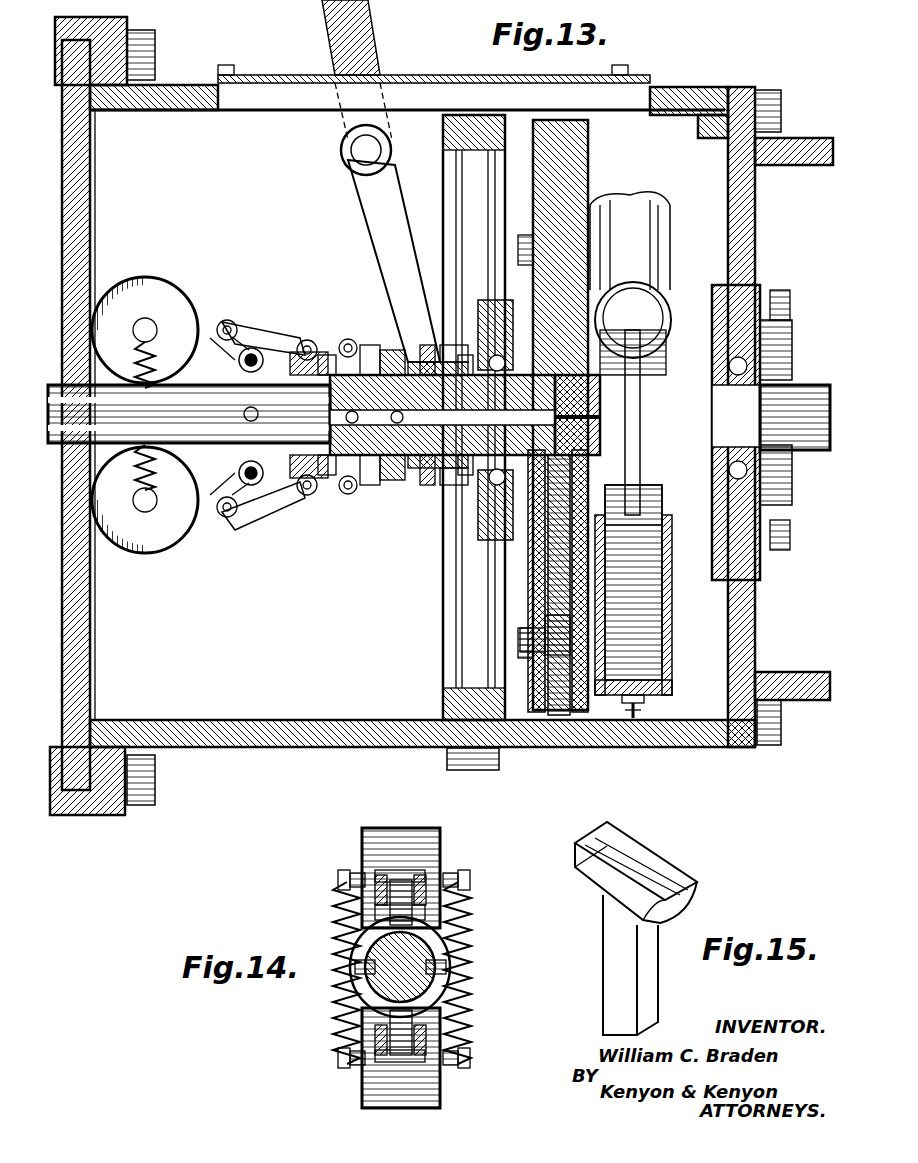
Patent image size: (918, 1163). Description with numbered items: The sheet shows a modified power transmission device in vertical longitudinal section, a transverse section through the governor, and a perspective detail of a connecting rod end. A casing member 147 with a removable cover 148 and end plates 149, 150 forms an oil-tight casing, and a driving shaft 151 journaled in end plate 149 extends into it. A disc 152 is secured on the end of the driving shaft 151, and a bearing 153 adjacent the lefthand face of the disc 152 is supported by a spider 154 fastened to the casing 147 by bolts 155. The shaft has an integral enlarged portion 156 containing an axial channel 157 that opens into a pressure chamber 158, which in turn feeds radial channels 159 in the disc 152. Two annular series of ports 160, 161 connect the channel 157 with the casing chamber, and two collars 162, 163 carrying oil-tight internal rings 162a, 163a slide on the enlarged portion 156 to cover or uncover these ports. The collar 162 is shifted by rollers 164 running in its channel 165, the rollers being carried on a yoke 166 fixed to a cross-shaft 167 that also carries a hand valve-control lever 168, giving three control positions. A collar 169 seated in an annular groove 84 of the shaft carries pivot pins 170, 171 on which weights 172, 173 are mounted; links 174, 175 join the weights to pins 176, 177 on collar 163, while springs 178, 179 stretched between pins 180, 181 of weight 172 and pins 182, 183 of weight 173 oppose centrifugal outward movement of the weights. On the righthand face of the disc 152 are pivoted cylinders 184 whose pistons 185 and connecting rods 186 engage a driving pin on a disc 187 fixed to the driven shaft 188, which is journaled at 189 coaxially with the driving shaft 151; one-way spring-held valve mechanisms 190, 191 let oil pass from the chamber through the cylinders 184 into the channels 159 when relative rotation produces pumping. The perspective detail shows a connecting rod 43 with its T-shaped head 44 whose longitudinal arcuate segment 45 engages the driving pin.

In FIG. 15, the connecting rod 43 is at (610, 952).
In FIG. 15, the T-shaped head 44 is at (690, 897).
In FIG. 15, the arcuate segment 45 is at (633, 858).
In FIG. 13, the annular groove 84 is at (243, 452).
In FIG. 13, the casing member 147 is at (268, 742).
In FIG. 13, the removable cover 148 is at (285, 75).
In FIG. 13, the end plate 149 is at (80, 185).
In FIG. 13, the end plate 150 is at (745, 245).
In FIG. 13, the driving shaft 151 is at (189, 414).
In FIG. 14, the driving shaft 151 is at (450, 950).
In FIG. 13, the disc 152 is at (578, 150).
In FIG. 13, the bearing 153 is at (490, 350).
In FIG. 13, the spider 154 is at (488, 200).
In FIG. 13, the bolts 155 is at (447, 762).
In FIG. 13, the enlarged portion 156 is at (315, 352).
In FIG. 13, the channel 157 is at (472, 470).
In FIG. 13, the pressure chamber 158 is at (600, 400).
In FIG. 13, the radial channels 159 is at (556, 560).
In FIG. 13, the ports 160 is at (380, 350).
In FIG. 13, the ports 161 is at (348, 345).
In FIG. 13, the collar 162 is at (462, 476).
In FIG. 13, the internal ring 162a is at (418, 480).
In FIG. 13, the collar 163 is at (370, 480).
In FIG. 13, the internal ring 163a is at (410, 483).
In FIG. 13, the rollers 164 is at (392, 480).
In FIG. 13, the channel 165 is at (427, 485).
In FIG. 13, the yoke 166 is at (372, 220).
In FIG. 13, the cross-shaft 167 is at (352, 150).
In FIG. 13, the hand valve-control lever 168 is at (370, 52).
In FIG. 13, the collar 169 is at (239, 362).
In FIG. 14, the collar 169 is at (445, 990).
In FIG. 13, the pivot pin 170 is at (228, 320).
In FIG. 14, the pivot pin 170 is at (430, 910).
In FIG. 13, the pivot pin 171 is at (250, 486).
In FIG. 14, the pivot pin 171 is at (430, 1025).
In FIG. 13, the weight 172 is at (160, 290).
In FIG. 14, the weight 172 is at (416, 840).
In FIG. 13, the weight 173 is at (145, 553).
In FIG. 14, the weight 173 is at (440, 1098).
In FIG. 13, the link 174 is at (282, 338).
In FIG. 14, the link 174 is at (380, 875).
In FIG. 13, the link 175 is at (285, 503).
In FIG. 14, the link 175 is at (378, 1070).
In FIG. 13, the pin 176 is at (307, 340).
In FIG. 13, the pin 177 is at (310, 496).
In FIG. 13, the spring 178 is at (148, 470).
In FIG. 14, the spring 178 is at (340, 915).
In FIG. 14, the spring 179 is at (448, 967).
In FIG. 14, the pin 180 is at (338, 876).
In FIG. 14, the pin 181 is at (462, 870).
In FIG. 14, the pin 182 is at (340, 1058).
In FIG. 14, the pin 183 is at (470, 1058).
In FIG. 13, the cylinders 184 is at (668, 622).
In FIG. 13, the pistons 185 is at (668, 530).
In FIG. 13, the connecting rods 186 is at (640, 435).
In FIG. 13, the disc 187 is at (718, 310).
In FIG. 13, the driven shaft 188 is at (800, 395).
In FIG. 13, the journal 189 is at (785, 330).
In FIG. 13, the one-way spring-held valve mechanism 190 is at (640, 715).
In FIG. 13, the one-way spring-held valve mechanism 191 is at (558, 715).